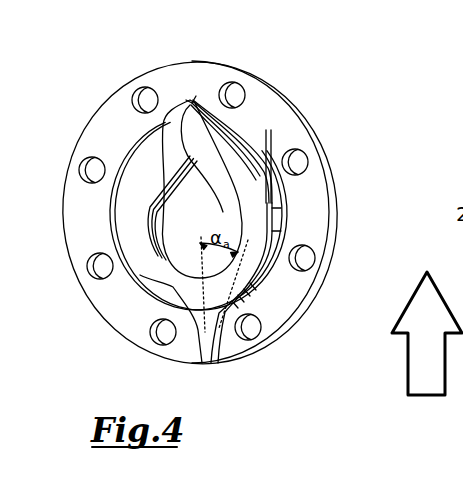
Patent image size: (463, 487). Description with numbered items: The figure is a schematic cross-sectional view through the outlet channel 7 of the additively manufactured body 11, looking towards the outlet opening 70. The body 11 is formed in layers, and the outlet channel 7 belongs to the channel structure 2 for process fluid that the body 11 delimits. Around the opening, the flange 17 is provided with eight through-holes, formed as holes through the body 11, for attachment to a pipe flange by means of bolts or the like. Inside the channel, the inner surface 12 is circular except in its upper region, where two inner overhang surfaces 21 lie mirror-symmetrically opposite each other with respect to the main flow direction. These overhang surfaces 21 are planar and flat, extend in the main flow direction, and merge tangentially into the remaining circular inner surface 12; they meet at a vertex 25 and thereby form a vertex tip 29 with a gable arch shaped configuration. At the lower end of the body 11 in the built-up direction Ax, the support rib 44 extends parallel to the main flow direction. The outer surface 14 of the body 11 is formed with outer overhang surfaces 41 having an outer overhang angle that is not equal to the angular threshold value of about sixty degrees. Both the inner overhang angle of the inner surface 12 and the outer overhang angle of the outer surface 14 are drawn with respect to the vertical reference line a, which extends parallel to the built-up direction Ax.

The channel structure 2 is at (243, 230).
The outlet channel 7 is at (246, 204).
The body 11 is at (267, 270).
The inner surface 12 is at (153, 222).
The outer surface 14 is at (217, 350).
The flange 17 is at (283, 118).
The overhang surfaces 21 is at (173, 127).
The vertex 25 is at (230, 107).
The vertex tip 29 is at (202, 150).
The overhang surfaces 41 is at (186, 332).
The support rib 44 is at (203, 350).
The outlet opening 70 is at (205, 223).
The vertical reference line a is at (183, 277).
The built-up direction Ax is at (418, 362).